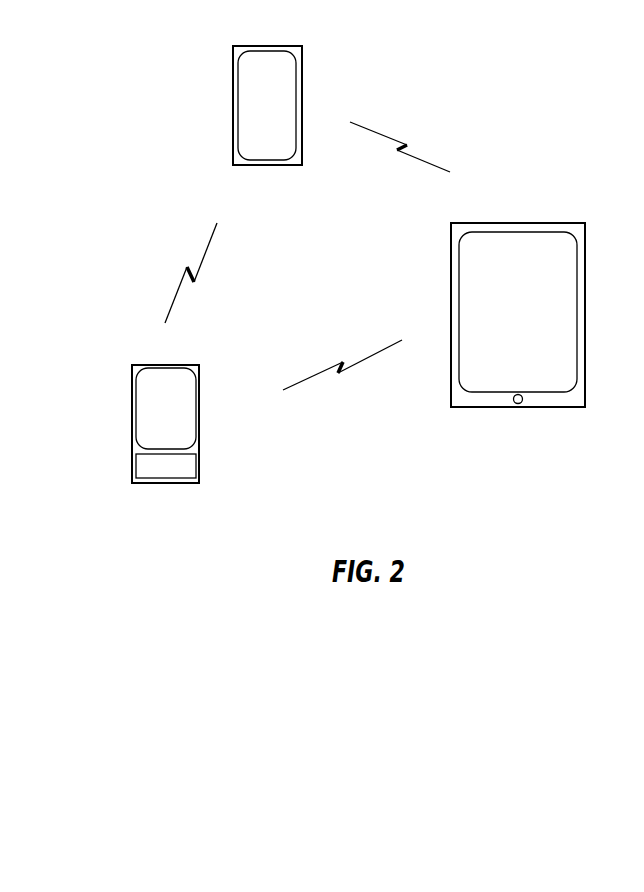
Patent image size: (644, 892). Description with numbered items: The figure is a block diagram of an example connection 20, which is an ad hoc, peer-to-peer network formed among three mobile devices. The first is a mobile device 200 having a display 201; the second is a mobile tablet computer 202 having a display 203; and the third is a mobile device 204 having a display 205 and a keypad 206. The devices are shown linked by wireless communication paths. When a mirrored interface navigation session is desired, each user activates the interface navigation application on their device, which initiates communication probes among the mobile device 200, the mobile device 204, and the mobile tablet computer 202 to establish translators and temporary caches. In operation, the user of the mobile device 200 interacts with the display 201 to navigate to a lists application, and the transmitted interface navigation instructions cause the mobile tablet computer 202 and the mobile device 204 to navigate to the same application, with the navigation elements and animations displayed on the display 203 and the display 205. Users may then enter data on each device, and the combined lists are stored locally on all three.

The connection 20 is at (488, 65).
The mobile device 200 is at (288, 46).
The display 201 is at (238, 126).
The mobile tablet computer 202 is at (554, 222).
The display 203 is at (462, 362).
The mobile device 204 is at (146, 363).
The display 205 is at (195, 404).
The keypad 206 is at (138, 460).